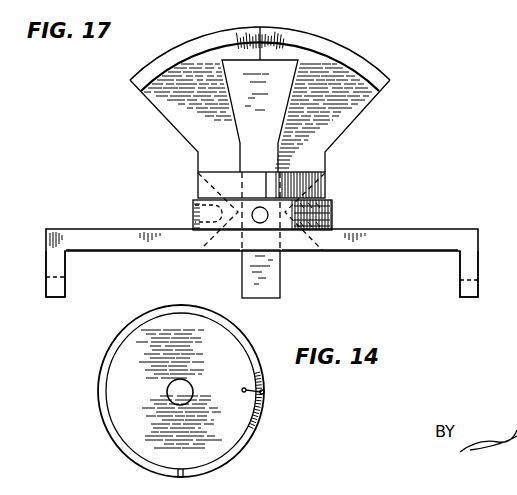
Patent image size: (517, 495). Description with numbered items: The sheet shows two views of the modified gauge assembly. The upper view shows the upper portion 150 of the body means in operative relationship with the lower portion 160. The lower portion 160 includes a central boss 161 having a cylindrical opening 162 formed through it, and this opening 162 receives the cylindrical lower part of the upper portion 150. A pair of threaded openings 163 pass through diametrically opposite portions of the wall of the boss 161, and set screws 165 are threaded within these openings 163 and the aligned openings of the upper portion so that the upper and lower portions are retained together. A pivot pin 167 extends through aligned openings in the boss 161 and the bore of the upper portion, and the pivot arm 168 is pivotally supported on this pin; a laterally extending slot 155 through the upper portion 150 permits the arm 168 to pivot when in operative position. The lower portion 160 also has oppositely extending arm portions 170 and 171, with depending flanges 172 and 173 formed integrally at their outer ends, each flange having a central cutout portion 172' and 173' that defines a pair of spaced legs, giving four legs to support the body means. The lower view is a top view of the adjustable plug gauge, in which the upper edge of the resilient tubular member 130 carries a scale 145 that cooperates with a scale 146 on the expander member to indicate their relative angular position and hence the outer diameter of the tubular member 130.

In FIG. 17, the upper portion 150 is at (366, 118).
In FIG. 17, the pivot arm 168 is at (283, 149).
In FIG. 17, the laterally extending slot 155 is at (312, 172).
In FIG. 17, the central boss 161 is at (331, 224).
In FIG. 17, the set screws 165 is at (197, 199).
In FIG. 17, the threaded openings 163 is at (193, 222).
In FIG. 17, the pivot pin 167 is at (257, 223).
In FIG. 17, the lower portion 160 is at (386, 220).
In FIG. 17, the arm portion 170 is at (129, 243).
In FIG. 17, the arm portion 171 is at (424, 243).
In FIG. 17, the cylindrical opening 162 is at (299, 238).
In FIG. 17, the depending flange 172 is at (78, 276).
In FIG. 17, the central cutout portion 172' is at (47, 300).
In FIG. 17, the depending flange 173 is at (488, 274).
In FIG. 17, the central cutout portion 173' is at (466, 309).
In FIG. 14, the tubular member 130 is at (257, 435).
In FIG. 14, the scale 145 is at (266, 403).
In FIG. 14, the cooperating scale 146 is at (245, 386).